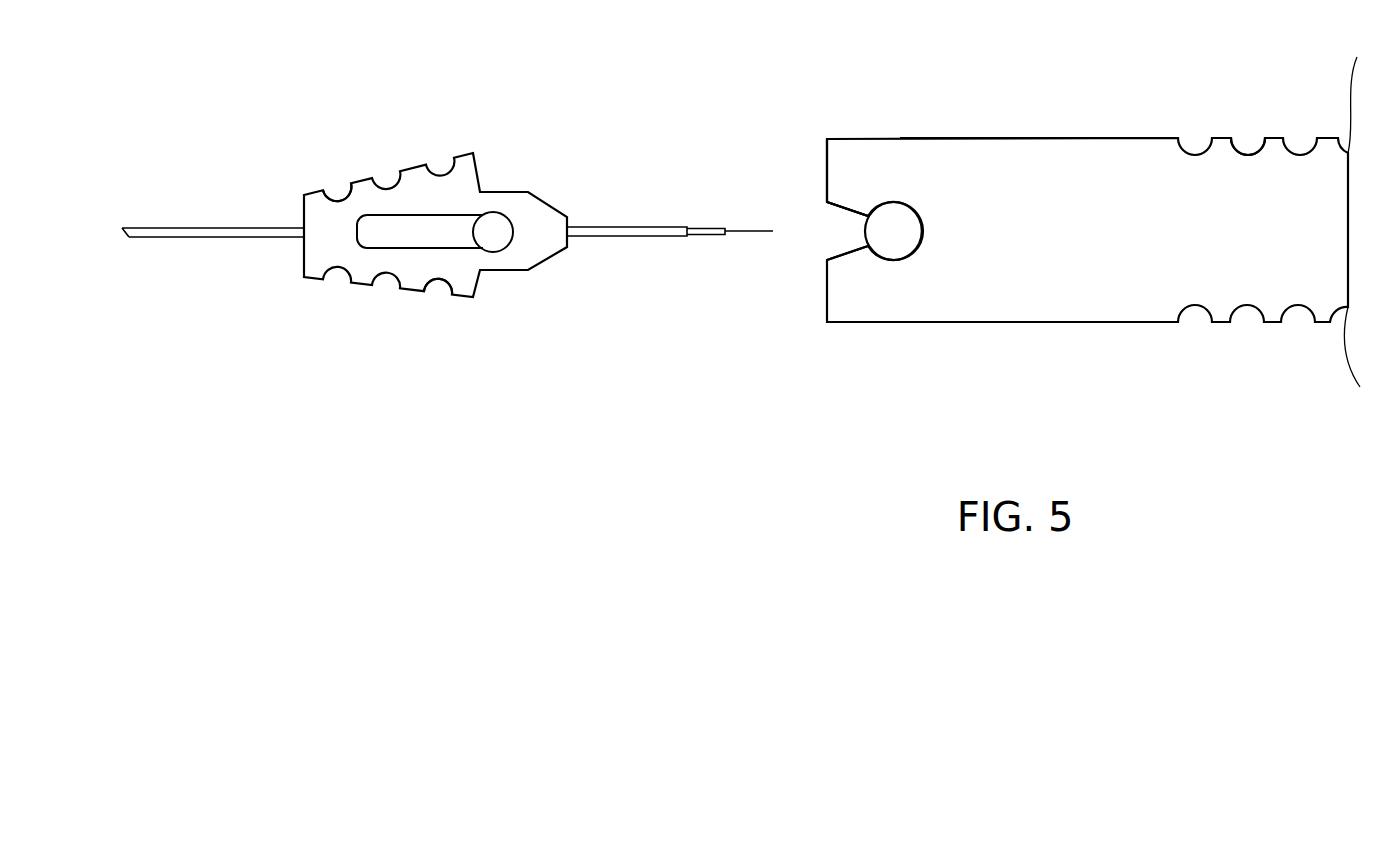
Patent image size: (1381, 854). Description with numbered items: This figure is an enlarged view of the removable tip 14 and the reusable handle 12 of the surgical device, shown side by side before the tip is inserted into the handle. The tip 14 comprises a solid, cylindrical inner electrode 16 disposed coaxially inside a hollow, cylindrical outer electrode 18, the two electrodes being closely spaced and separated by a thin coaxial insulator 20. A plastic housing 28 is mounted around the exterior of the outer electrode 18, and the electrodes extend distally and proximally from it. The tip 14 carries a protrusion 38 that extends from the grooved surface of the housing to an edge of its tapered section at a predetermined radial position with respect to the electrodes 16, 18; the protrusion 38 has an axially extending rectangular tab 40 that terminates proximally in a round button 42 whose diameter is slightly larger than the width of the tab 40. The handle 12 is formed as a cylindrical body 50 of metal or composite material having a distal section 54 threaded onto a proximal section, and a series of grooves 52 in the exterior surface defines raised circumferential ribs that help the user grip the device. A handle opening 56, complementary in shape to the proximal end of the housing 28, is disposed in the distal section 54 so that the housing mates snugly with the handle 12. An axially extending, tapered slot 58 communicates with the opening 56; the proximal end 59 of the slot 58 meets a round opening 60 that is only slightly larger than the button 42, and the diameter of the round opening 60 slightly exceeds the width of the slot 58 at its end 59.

The reusable handle 12 is at (1143, 323).
The removable tip 14 is at (493, 192).
The inner electrode 16 is at (752, 232).
The outer electrode 18 is at (605, 225).
The coaxial insulator 20 is at (707, 227).
The plastic housing 28 is at (362, 185).
The protrusion 38 is at (458, 271).
The rectangular tab 40 is at (430, 242).
The round button 42 is at (498, 240).
The cylindrical body 50 is at (1110, 137).
The grooves 52 is at (1255, 132).
The distal section 54 is at (982, 340).
The handle opening 56 is at (810, 157).
The tapered slot 58 is at (821, 242).
The proximal end of slot 59 is at (870, 195).
The round opening 60 is at (903, 221).